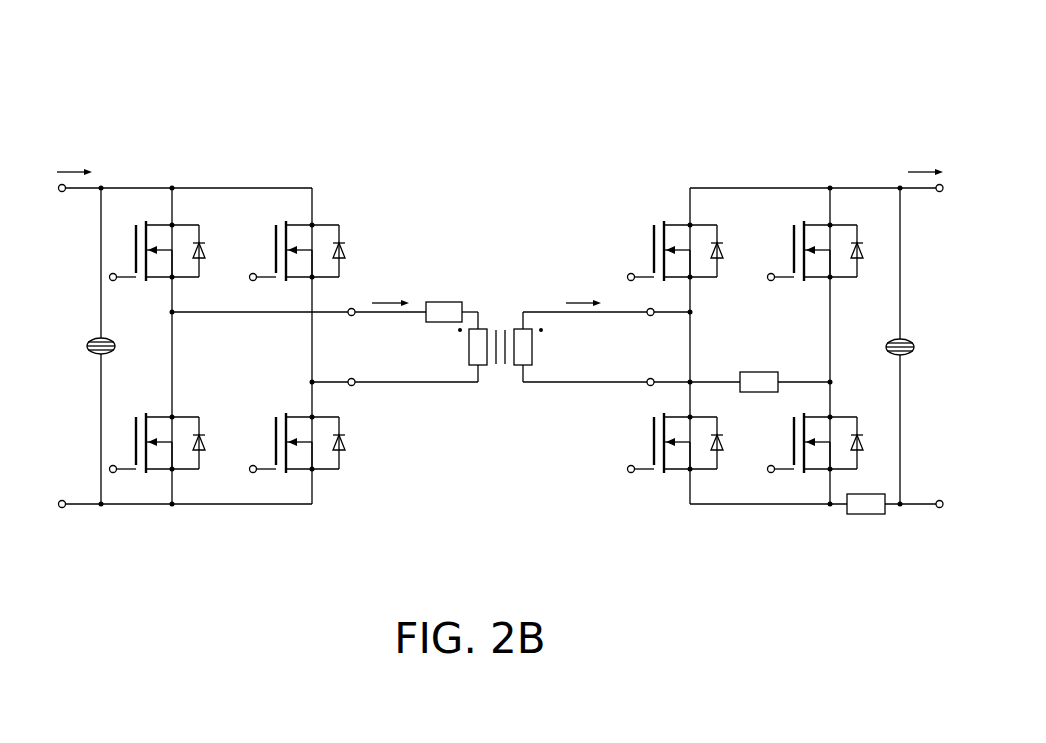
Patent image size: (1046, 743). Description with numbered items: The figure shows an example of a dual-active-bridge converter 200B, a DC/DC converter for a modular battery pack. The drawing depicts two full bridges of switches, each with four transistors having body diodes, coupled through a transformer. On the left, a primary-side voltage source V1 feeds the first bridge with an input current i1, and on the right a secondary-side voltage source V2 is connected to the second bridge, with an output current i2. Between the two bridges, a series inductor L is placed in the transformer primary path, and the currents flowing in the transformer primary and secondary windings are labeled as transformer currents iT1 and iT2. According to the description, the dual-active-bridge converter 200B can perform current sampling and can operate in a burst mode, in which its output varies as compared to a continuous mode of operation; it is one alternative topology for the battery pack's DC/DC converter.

The dual-active-bridge converter 200B is at (182, 66).
The primary-side DC voltage source V1 is at (81, 346).
The secondary-side DC voltage source V2 is at (917, 346).
The series inductor L is at (444, 304).
The primary input current i1 is at (79, 168).
The secondary output current i2 is at (921, 168).
The transformer primary current iT1 is at (390, 296).
The transformer secondary current iT2 is at (585, 296).